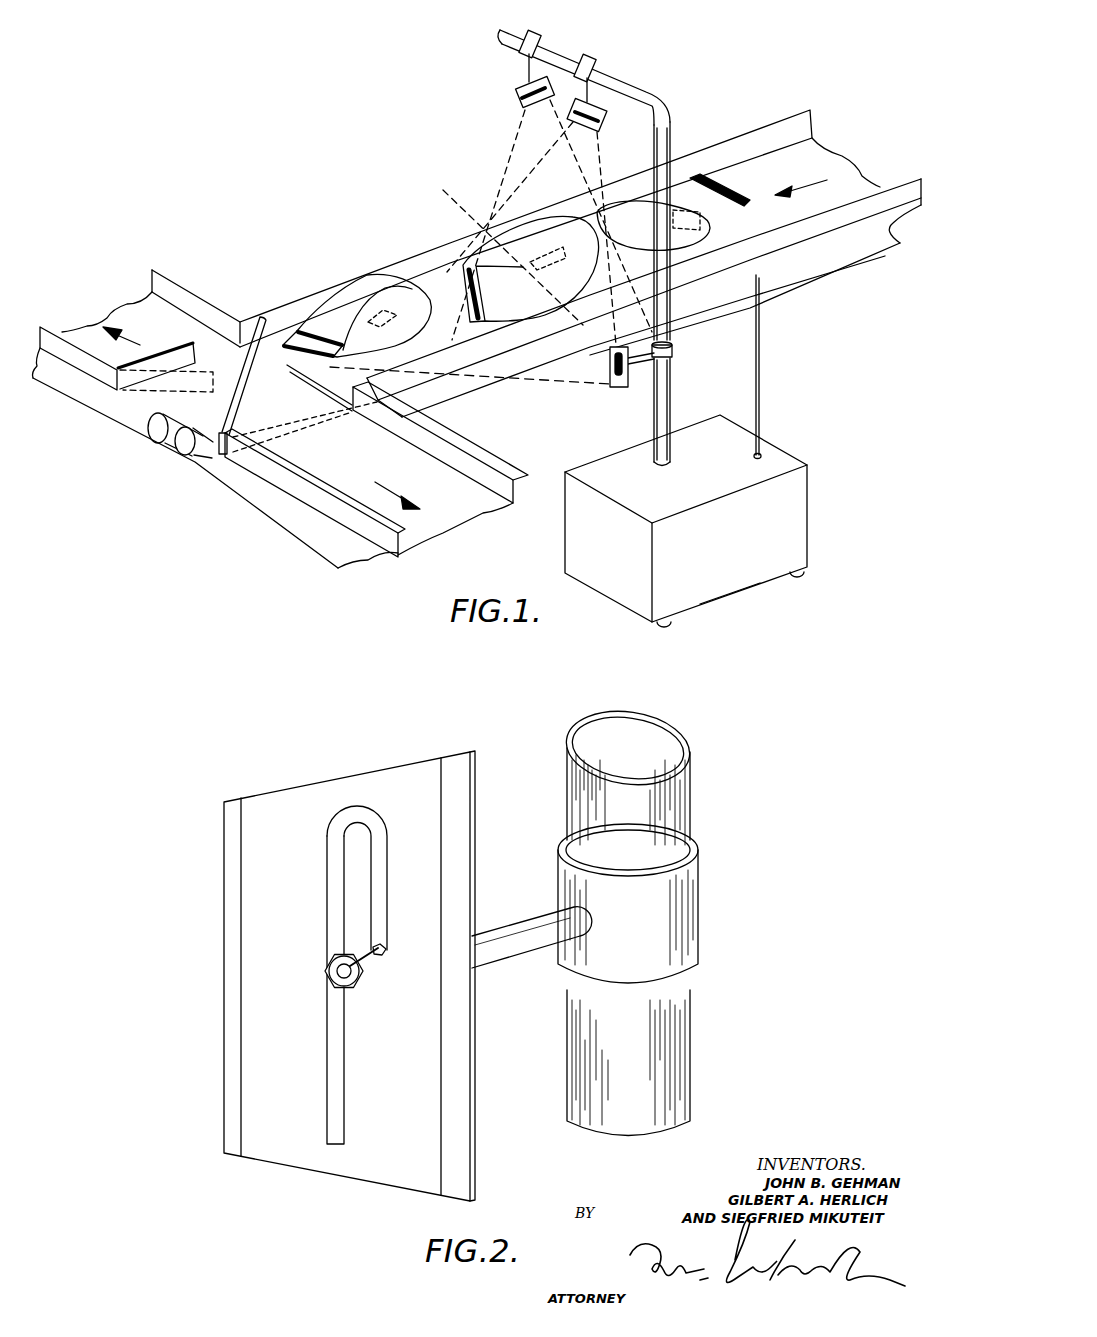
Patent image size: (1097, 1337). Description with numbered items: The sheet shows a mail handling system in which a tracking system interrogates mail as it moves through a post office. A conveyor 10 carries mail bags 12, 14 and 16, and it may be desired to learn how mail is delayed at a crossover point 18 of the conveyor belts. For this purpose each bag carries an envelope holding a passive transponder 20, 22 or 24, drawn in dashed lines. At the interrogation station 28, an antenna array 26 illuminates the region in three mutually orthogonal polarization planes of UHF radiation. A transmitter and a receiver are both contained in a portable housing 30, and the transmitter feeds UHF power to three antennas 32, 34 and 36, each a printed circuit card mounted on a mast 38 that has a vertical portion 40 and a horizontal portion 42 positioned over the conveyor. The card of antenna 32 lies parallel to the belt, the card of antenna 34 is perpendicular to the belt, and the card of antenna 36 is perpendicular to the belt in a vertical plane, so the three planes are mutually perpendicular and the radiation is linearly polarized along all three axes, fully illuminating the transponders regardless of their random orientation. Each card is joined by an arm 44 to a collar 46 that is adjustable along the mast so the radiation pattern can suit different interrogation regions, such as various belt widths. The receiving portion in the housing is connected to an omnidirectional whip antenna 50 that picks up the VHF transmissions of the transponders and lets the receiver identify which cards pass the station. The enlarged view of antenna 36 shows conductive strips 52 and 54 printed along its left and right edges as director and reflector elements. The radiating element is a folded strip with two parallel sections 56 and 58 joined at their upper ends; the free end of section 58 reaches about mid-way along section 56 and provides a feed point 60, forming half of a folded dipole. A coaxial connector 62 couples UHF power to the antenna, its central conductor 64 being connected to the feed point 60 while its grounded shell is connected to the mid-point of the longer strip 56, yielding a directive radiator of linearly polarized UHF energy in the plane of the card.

In FIG. 1, the conveyor 10 is at (830, 162).
In FIG. 1, the mail bag 12 is at (722, 206).
In FIG. 1, the mail bag 14 is at (535, 233).
In FIG. 1, the mail bag 16 is at (350, 288).
In FIG. 1, the crossover point 18 is at (178, 415).
In FIG. 1, the passive transponder 20 is at (700, 228).
In FIG. 1, the passive transponder 22 is at (555, 262).
In FIG. 1, the passive transponder 24 is at (388, 327).
In FIG. 1, the antenna array 26 is at (599, 235).
In FIG. 1, the station 28 is at (813, 497).
In FIG. 1, the housing 30 is at (723, 590).
In FIG. 1, the antenna 32 is at (517, 96).
In FIG. 1, the antenna 34 is at (603, 127).
In FIG. 1, the antenna 36 is at (613, 390).
In FIG. 2, the antenna 36 is at (343, 976).
In FIG. 1, the mast 38 is at (671, 381).
In FIG. 2, the mast 38 is at (690, 1024).
In FIG. 1, the vertical portion 40 is at (671, 302).
In FIG. 1, the horizontal portion 42 is at (578, 50).
In FIG. 1, the arm 44 is at (527, 64).
In FIG. 2, the arm 44 is at (512, 924).
In FIG. 1, the collar 46 is at (538, 30).
In FIG. 2, the collar 46 is at (690, 896).
In FIG. 1, the omnidirectional antenna 50 is at (761, 371).
In FIG. 2, the conductive strip 52 is at (227, 913).
In FIG. 2, the conductive strip 54 is at (458, 875).
In FIG. 2, the parallel section 56 is at (335, 1011).
In FIG. 2, the parallel section 58 is at (379, 888).
In FIG. 2, the feed point 60 is at (387, 950).
In FIG. 2, the coaxial connector 62 is at (355, 983).
In FIG. 2, the central conductor 64 is at (358, 973).